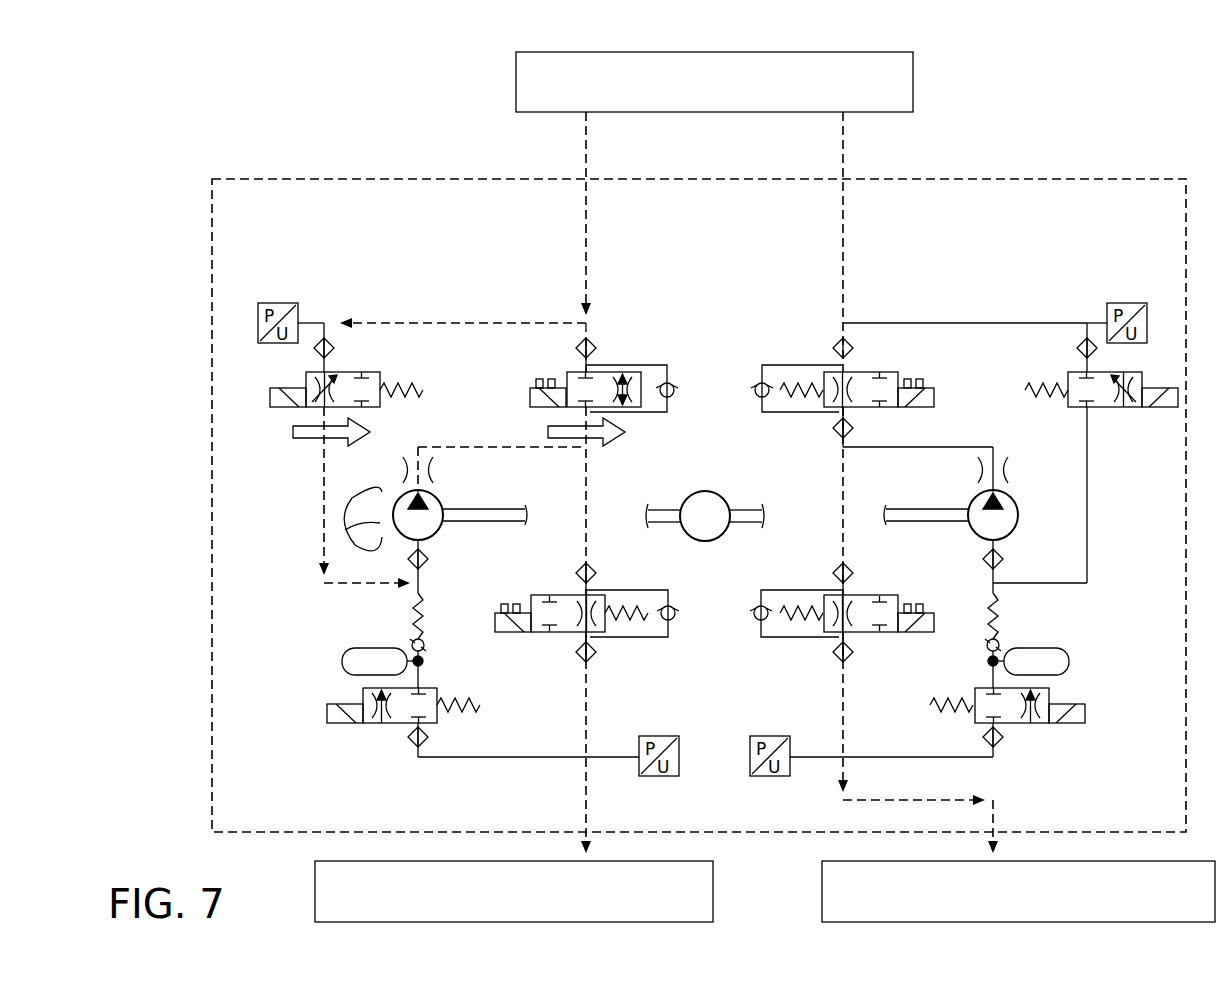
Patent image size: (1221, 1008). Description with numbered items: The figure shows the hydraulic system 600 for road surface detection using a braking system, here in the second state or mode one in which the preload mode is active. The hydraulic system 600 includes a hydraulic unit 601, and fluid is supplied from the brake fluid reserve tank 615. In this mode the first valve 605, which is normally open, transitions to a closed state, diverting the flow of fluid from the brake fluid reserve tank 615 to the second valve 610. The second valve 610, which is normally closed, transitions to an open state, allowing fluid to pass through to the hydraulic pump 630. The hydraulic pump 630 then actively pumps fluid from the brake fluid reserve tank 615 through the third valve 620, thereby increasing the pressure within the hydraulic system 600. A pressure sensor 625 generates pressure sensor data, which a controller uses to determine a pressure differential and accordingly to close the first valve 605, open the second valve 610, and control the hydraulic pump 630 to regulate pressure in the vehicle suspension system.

The hydraulic system 600 is at (170, 60).
The hydraulic unit 601 is at (1132, 156).
The first valve 605 is at (543, 328).
The second valve 610 is at (296, 298).
The brake fluid reserve tank 615 is at (588, 48).
The third valve 620 is at (546, 668).
The pressure sensor 625 is at (628, 745).
The hydraulic pump 630 is at (383, 520).